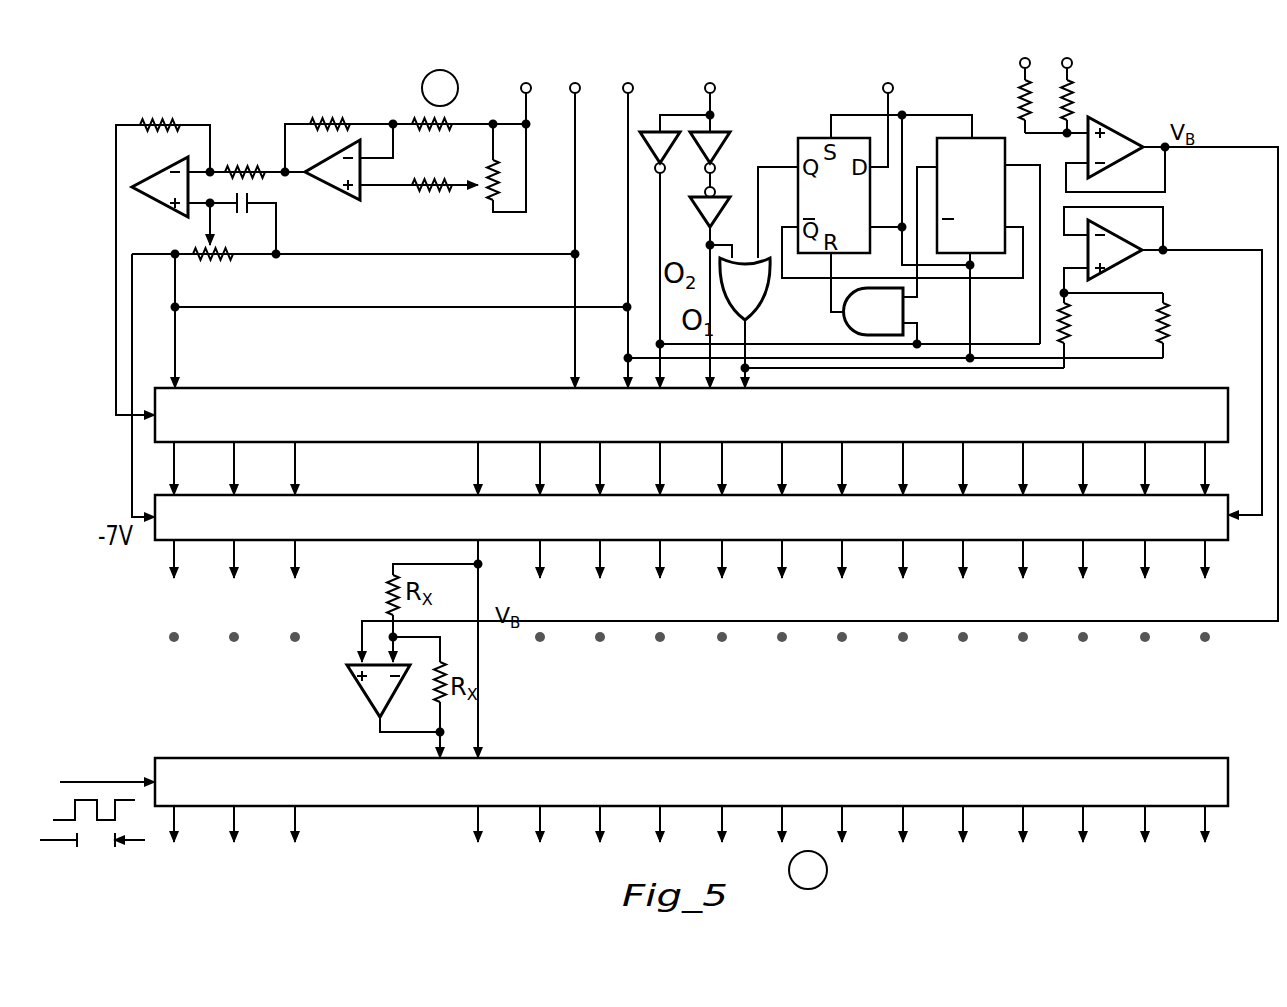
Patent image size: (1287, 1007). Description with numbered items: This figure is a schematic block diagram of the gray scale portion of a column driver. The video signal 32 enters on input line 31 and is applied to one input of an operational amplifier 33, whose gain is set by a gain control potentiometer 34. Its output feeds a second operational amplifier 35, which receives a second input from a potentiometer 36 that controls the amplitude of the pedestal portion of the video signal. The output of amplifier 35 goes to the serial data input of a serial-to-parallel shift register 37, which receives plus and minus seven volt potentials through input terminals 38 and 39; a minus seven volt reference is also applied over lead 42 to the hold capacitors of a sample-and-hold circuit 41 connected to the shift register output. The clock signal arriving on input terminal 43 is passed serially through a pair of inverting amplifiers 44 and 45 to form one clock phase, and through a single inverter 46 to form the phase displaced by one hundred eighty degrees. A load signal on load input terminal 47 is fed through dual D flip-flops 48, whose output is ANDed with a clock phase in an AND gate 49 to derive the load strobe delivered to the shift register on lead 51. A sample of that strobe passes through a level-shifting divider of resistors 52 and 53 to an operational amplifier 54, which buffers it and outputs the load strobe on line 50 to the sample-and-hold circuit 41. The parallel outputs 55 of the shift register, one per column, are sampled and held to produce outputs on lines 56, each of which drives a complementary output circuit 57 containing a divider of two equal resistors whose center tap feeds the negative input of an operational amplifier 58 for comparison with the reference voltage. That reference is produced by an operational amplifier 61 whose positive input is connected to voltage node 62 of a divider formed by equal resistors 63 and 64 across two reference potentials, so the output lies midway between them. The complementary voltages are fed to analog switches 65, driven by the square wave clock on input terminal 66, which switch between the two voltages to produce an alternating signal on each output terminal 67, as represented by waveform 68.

The input line 31 is at (526, 161).
The video signal waveform 32 is at (440, 88).
The operational amplifier 33 is at (358, 152).
The gain control potentiometer 34 is at (440, 176).
The second operational amplifier 35 is at (162, 168).
The potentiometer 36 is at (198, 234).
The serial-to-parallel shift register 37 is at (1102, 430).
The input terminal 38 is at (572, 163).
The input terminal 39 is at (628, 218).
The sample-and-hold circuit 41 is at (1100, 530).
The lead 42 is at (393, 307).
The clock input terminal 43 is at (718, 95).
The inverting amplifier 44 is at (727, 140).
The inverting amplifier 45 is at (702, 228).
The inverter 46 is at (666, 168).
The load input terminal 47 is at (886, 100).
The dual D flip-flops 48 is at (986, 132).
The AND gate 49 is at (757, 296).
The load strobe line 50 is at (1262, 357).
The lead 51 is at (752, 334).
The resistor 52 is at (1069, 326).
The resistor 53 is at (1168, 327).
The operational amplifier 54 is at (1138, 238).
The parallel outputs 55 is at (689, 468).
The output lines 56 is at (689, 649).
The complementary output producing circuit 57 is at (346, 682).
The operational amplifier 58 is at (370, 710).
The operational amplifier 61 is at (1134, 130).
The voltage node 62 is at (1062, 135).
The resistor 63 is at (1027, 82).
The resistor 64 is at (1069, 82).
The analog switches 65 is at (1072, 793).
The input terminal 66 is at (70, 784).
The output terminal 67 is at (689, 833).
The waveform 68 is at (808, 870).